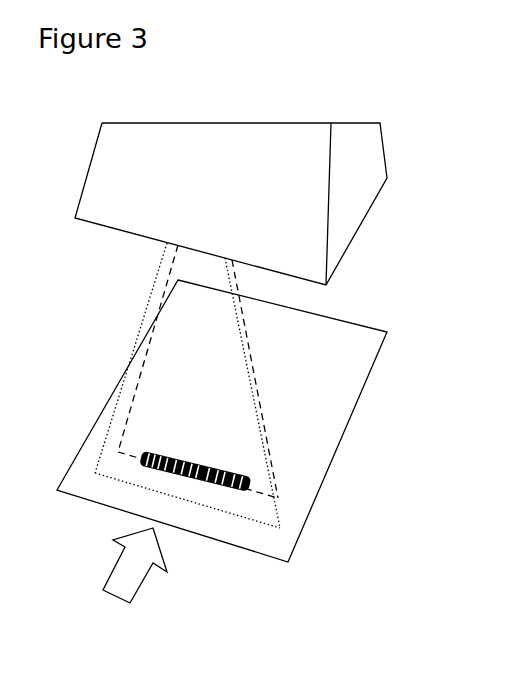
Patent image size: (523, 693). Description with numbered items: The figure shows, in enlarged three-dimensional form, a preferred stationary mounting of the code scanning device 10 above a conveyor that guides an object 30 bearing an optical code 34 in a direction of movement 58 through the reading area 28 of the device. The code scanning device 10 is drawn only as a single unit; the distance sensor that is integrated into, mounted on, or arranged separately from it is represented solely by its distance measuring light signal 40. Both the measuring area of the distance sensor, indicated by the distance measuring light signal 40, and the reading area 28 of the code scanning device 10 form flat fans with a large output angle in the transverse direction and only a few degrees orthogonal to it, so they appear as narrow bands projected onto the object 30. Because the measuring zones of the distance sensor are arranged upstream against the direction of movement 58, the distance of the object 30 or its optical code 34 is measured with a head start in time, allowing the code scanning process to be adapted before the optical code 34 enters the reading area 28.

The code scanning device 10 is at (284, 204).
The reading area 28 is at (222, 371).
The object 30 is at (244, 421).
The optical code 34 is at (140, 500).
The distance measuring light signal 40 is at (168, 385).
The direction of movement 58 is at (158, 586).